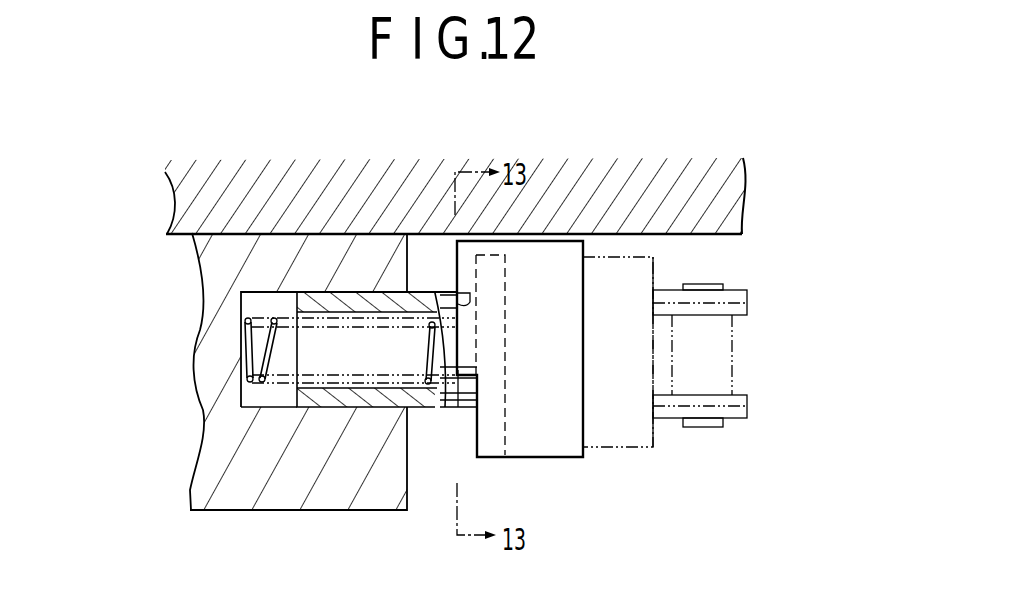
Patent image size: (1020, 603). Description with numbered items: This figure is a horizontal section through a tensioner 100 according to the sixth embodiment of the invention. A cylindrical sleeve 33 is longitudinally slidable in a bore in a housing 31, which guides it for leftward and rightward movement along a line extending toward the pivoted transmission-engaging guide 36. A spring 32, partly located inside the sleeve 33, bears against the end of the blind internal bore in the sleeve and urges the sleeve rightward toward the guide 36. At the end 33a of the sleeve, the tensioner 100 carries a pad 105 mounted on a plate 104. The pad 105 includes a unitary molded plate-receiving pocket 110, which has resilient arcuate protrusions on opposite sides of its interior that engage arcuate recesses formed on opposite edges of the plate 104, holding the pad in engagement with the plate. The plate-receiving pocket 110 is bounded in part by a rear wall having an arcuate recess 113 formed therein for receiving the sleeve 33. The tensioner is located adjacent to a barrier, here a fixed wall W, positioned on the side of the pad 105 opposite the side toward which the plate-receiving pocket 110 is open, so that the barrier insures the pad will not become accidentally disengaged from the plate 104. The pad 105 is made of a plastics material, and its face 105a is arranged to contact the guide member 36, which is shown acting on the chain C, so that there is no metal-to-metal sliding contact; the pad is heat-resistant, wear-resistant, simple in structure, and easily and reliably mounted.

The housing 31 is at (218, 520).
The spring 32 is at (242, 384).
The cylindrical sleeve 33 is at (405, 512).
The end of the sleeve 33a is at (418, 420).
The tensioner 100 is at (302, 522).
The plate 104 is at (496, 469).
The pad 105 is at (579, 468).
The face of the pad 105a is at (585, 425).
The plate-receiving pocket 110 is at (450, 262).
The arcuate recess 113 is at (448, 292).
The guide 36 is at (660, 470).
The chain C is at (753, 445).
The fixed wall W is at (716, 172).